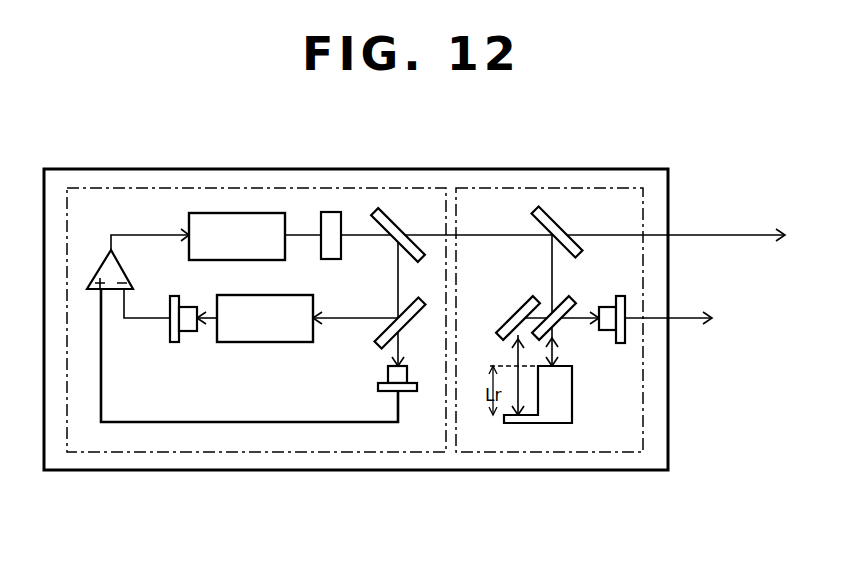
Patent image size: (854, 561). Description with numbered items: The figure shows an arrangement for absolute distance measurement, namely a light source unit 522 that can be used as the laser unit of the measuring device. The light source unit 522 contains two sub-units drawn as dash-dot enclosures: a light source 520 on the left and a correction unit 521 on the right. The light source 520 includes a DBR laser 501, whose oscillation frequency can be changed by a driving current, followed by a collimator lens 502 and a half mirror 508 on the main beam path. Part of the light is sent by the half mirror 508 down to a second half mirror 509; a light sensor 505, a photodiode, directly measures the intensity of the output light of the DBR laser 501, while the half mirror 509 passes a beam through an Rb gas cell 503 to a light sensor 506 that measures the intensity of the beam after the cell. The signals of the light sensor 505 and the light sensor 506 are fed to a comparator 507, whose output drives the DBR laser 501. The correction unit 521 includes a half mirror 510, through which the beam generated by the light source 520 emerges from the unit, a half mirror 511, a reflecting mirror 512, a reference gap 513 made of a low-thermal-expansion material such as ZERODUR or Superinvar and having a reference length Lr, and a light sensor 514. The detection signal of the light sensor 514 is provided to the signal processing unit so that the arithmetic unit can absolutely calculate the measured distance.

The DBR laser 501 is at (228, 220).
The collimator lens 502 is at (331, 220).
The Rb gas cell 503 is at (253, 342).
The light sensor 505 is at (388, 376).
The light sensor 506 is at (187, 332).
The comparator 507 is at (95, 275).
The half mirror 508 is at (397, 222).
The half mirror 509 is at (381, 331).
The half mirror 510 is at (557, 220).
The half mirror 511 is at (560, 311).
The reflecting mirror 512 is at (517, 309).
The reference gap 513 is at (540, 424).
The light sensor 514 is at (605, 343).
The light source 520 is at (113, 455).
The correction unit 521 is at (605, 454).
The light source unit 522 is at (203, 472).